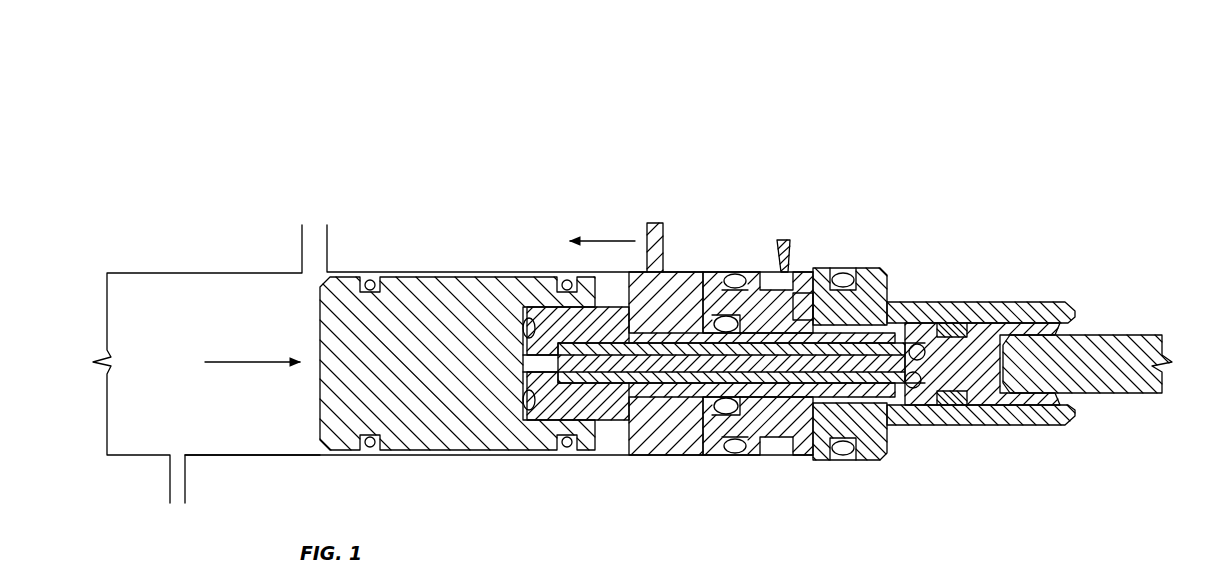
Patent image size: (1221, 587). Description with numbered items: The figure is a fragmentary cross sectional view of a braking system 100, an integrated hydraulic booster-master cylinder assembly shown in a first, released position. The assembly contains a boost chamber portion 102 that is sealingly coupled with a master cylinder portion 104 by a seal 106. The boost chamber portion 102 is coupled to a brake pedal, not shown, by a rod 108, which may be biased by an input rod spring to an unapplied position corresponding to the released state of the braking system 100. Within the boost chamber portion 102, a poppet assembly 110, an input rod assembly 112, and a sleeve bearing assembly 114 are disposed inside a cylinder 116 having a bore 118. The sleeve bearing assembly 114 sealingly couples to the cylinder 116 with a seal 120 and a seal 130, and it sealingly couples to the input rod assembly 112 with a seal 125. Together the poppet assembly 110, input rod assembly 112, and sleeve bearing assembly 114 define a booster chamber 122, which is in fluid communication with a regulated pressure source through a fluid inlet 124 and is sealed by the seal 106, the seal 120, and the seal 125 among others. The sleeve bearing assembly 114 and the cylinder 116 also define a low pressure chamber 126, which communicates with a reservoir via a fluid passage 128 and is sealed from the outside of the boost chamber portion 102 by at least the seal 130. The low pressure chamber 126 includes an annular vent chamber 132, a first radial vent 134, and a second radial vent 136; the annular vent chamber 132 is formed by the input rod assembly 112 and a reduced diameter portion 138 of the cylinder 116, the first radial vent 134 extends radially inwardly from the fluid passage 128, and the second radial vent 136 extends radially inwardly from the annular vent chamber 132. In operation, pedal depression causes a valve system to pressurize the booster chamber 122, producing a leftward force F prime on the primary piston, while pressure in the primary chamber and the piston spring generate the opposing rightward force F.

The braking system 100 is at (116, 100).
The boost chamber portion 102 is at (542, 212).
The master cylinder portion 104 is at (527, 212).
The seal 106 is at (531, 412).
The rod 108 is at (1125, 335).
The poppet assembly 110 is at (638, 422).
The input rod assembly 112 is at (668, 406).
The sleeve bearing assembly 114 is at (694, 414).
The cylinder 116 is at (689, 271).
The bore 118 is at (772, 458).
The seal 120 is at (738, 272).
The booster chamber 122 is at (648, 312).
The fluid inlet 124 is at (664, 224).
The seal 125 is at (804, 300).
The low pressure chamber 126 is at (805, 458).
The fluid passage 128 is at (790, 246).
The seal 130 is at (868, 266).
The annular vent chamber 132 is at (890, 318).
The first radial vent 134 is at (852, 270).
The second radial vent 136 is at (905, 406).
The reduced diameter portion 138 is at (891, 428).